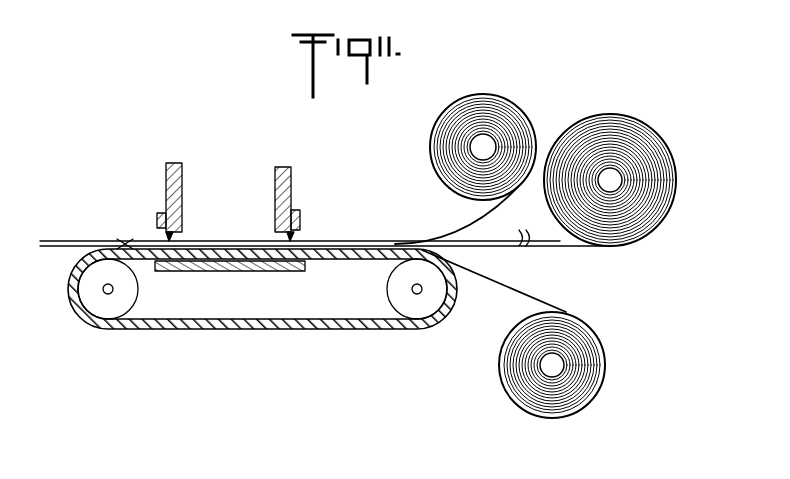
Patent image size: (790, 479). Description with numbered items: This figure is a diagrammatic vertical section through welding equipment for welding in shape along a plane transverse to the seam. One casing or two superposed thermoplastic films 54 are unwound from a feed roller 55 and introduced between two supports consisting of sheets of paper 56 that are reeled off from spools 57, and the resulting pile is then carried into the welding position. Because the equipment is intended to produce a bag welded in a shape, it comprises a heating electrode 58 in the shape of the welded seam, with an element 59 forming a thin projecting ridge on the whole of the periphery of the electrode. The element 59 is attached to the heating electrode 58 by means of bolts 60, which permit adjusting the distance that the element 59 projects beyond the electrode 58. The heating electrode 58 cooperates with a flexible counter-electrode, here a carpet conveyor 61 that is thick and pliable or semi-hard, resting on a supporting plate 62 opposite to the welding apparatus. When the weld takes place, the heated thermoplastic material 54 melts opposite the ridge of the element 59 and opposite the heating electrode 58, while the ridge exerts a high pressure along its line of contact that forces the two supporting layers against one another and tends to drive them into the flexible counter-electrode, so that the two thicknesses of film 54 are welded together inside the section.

The thermoplastic films 54 is at (325, 228).
The feed roller 55 is at (611, 114).
The sheets of paper 56 is at (457, 230).
The spools 57 is at (431, 125).
The heating electrode 58 is at (183, 186).
The element forming a thin projecting ridge 59 is at (166, 235).
The bolts 60 is at (157, 220).
The carpet conveyor 61 is at (338, 262).
The supporting plate 62 is at (226, 265).